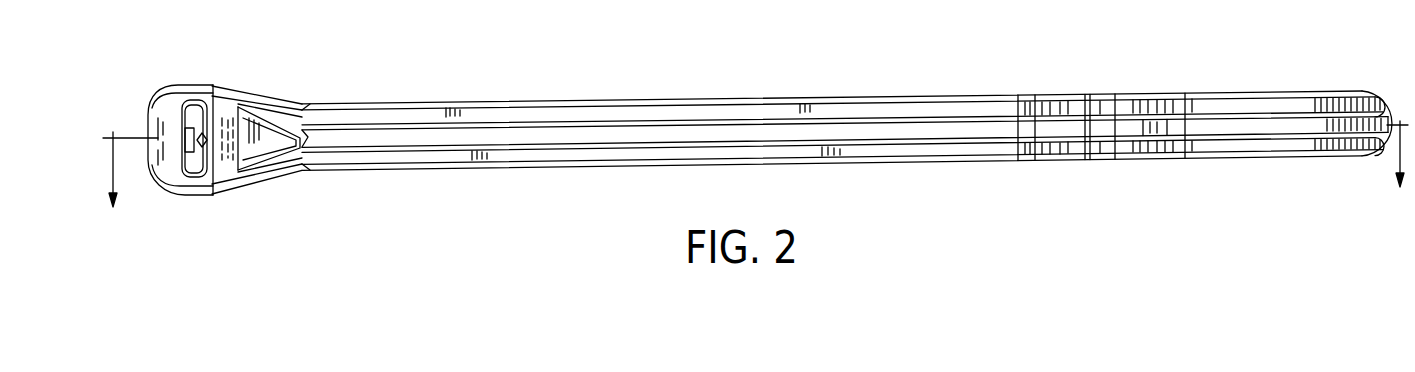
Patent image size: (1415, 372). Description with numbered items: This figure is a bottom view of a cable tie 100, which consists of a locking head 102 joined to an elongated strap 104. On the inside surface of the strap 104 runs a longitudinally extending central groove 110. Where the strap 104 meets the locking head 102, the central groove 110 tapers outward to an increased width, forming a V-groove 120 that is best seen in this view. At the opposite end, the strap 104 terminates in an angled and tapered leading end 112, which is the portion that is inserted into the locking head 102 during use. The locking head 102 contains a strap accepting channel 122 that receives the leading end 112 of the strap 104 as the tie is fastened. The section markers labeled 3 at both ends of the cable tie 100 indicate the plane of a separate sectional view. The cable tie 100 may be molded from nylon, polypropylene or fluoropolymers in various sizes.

The cable tie 100 is at (798, 83).
The locking head 102 is at (190, 197).
The strap 104 is at (596, 101).
The central groove 110 is at (515, 135).
The leading end 112 is at (1250, 107).
The V-groove 120 is at (262, 132).
The strap accepting channel 122 is at (196, 108).
The section line 3- 3 is at (756, 178).